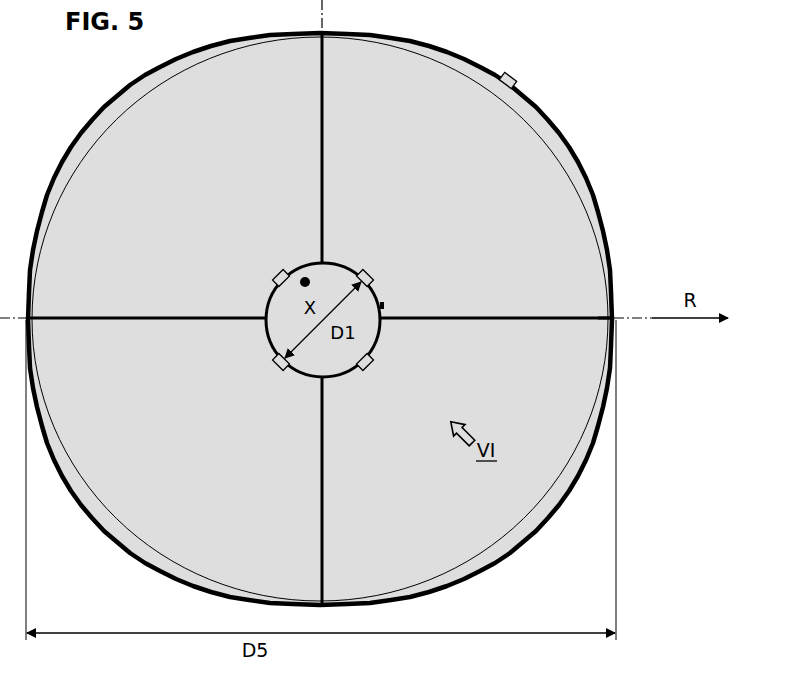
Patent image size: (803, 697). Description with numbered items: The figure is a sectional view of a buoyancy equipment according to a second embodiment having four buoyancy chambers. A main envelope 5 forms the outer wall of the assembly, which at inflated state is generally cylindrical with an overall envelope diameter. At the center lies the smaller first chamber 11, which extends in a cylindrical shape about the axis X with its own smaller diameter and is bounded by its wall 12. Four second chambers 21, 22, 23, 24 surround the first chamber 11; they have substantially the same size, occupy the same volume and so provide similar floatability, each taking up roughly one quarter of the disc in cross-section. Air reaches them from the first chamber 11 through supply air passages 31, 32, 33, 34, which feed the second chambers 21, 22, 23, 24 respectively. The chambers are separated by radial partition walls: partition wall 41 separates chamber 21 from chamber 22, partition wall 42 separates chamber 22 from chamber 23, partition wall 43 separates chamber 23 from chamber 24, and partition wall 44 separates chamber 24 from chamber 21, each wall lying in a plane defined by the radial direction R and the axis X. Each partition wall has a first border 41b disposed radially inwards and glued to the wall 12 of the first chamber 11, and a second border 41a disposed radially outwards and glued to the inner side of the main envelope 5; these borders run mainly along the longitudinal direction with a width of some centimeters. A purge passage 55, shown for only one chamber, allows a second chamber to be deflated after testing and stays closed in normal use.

The main envelope 5 is at (577, 150).
The purge passage 55 is at (516, 78).
The first chamber 11 is at (303, 277).
The wall of the first chamber 12 is at (352, 262).
The first second chamber 21 is at (456, 214).
The second chamber 22 is at (366, 454).
The second chamber 23 is at (148, 458).
The second chamber 24 is at (193, 178).
The supply air passage 31 is at (374, 270).
The supply air passage 32 is at (378, 363).
The supply air passage 33 is at (272, 366).
The supply air passage 34 is at (277, 279).
The partition wall 41 is at (487, 317).
The second border 41a is at (387, 311).
The first border 41b is at (607, 328).
The partition wall 42 is at (323, 545).
The partition wall 43 is at (110, 316).
The partition wall 44 is at (323, 165).